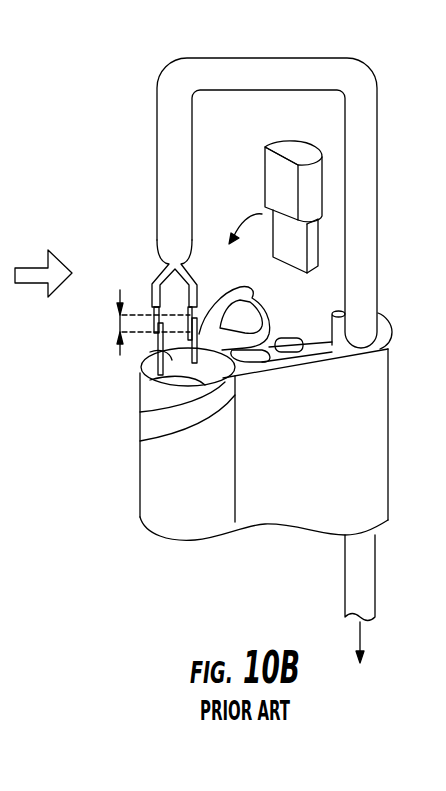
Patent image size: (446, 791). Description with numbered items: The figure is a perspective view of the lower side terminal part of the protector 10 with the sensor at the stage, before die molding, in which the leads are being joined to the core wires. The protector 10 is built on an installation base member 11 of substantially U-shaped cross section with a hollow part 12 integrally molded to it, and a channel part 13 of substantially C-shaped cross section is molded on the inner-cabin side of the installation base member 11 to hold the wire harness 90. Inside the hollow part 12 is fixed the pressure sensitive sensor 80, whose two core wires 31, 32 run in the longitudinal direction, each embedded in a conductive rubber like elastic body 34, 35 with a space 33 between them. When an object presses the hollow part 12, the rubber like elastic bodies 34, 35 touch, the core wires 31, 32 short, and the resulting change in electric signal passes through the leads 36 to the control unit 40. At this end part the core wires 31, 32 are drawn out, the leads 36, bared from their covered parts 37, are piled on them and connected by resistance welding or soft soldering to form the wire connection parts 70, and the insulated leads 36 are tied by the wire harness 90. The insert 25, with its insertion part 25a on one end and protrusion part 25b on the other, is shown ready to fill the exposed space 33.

The protector with the sensor 10 is at (144, 567).
The installation base member 11 is at (329, 434).
The hollow part 12 is at (208, 537).
The channel part 13 is at (385, 329).
The insert 25 is at (322, 198).
The insertion part 25a is at (298, 240).
The protrusion part 25b is at (318, 187).
The core wire 31 is at (150, 352).
The core wire 32 is at (237, 374).
The space 33 is at (140, 412).
The rubber like elastic body 34 is at (150, 380).
The rubber like elastic body 35 is at (140, 441).
The lead 36 is at (153, 318).
The covered part 37 is at (152, 305).
The control unit 40 is at (378, 694).
The wire connection part 70 is at (139, 322).
The pressure sensitive sensor 80 is at (165, 482).
The wire harness 90 is at (363, 157).